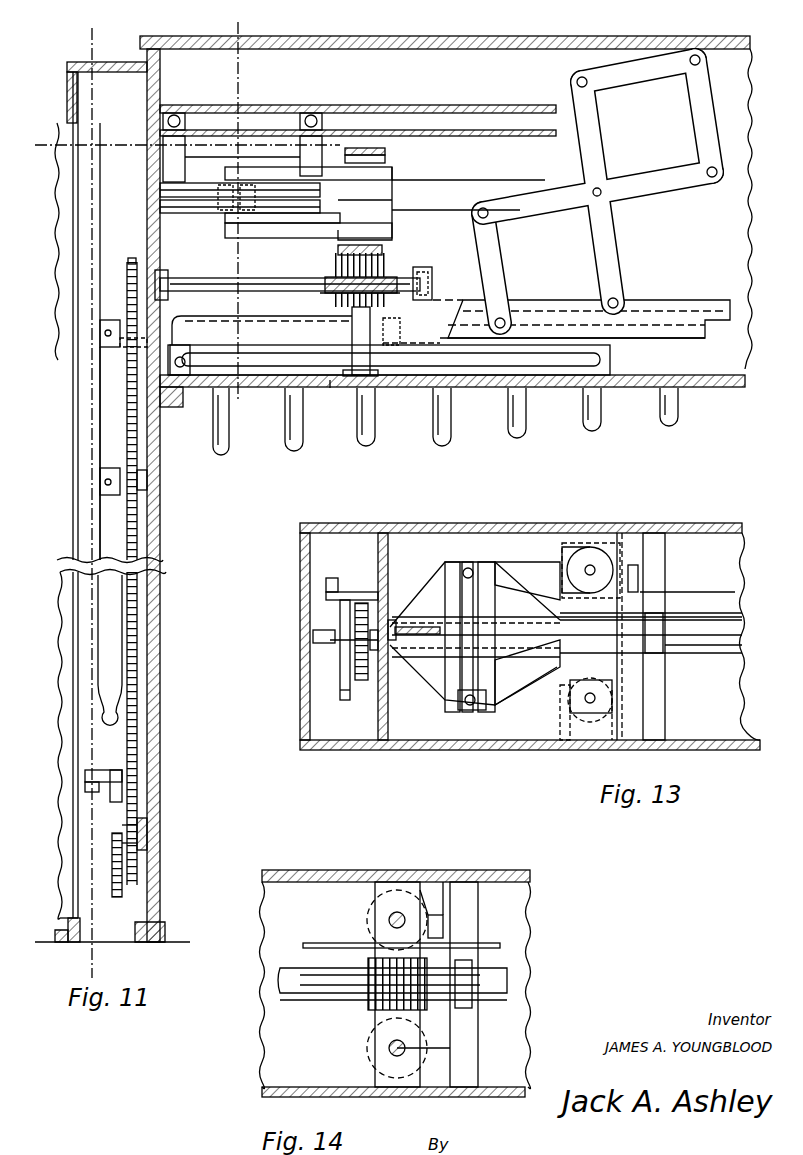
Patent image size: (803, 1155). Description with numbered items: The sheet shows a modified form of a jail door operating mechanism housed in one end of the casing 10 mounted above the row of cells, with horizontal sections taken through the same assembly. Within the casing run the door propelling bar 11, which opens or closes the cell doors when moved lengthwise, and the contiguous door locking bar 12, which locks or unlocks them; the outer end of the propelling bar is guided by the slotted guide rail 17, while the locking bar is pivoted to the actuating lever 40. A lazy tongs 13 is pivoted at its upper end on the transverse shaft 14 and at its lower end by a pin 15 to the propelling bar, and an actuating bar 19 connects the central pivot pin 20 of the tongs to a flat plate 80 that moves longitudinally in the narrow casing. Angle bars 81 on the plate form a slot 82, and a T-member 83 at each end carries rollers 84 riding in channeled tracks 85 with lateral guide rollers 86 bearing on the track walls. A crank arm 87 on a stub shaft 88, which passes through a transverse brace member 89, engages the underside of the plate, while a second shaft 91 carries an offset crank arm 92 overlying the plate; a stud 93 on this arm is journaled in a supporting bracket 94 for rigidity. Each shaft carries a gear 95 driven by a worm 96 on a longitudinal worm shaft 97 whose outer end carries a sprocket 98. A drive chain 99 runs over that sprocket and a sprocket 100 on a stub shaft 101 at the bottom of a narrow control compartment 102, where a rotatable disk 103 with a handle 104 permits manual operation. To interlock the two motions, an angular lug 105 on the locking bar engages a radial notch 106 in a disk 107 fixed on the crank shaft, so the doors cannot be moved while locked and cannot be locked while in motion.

In FIG. 11, the casing 10 is at (385, 48).
In FIG. 14, the casing 10 is at (294, 869).
In FIG. 11, the door propelling bar 11 is at (691, 320).
In FIG. 13, the door propelling bar 11 is at (710, 644).
In FIG. 14, the door propelling bar 11 is at (503, 984).
In FIG. 11, the door locking bar 12 is at (104, 48).
In FIG. 13, the door locking bar 12 is at (704, 594).
In FIG. 14, the door locking bar 12 is at (501, 946).
In FIG. 11, the lazy tongs 13 is at (45, 162).
In FIG. 11, the transverse shaft 14 is at (308, 243).
In FIG. 11, the pin 15 is at (252, 32).
In FIG. 11, the guide rail 17 is at (234, 420).
In FIG. 13, the guide rail 17 is at (720, 623).
In FIG. 14, the guide rail 17 is at (294, 1000).
In FIG. 11, the actuating bar 19 is at (416, 200).
In FIG. 13, the actuating bar 19 is at (692, 653).
In FIG. 11, the central pivot pin 20 is at (605, 198).
In FIG. 11, the actuating lever 40 is at (107, 414).
In FIG. 13, the actuating lever 40 is at (332, 580).
In FIG. 11, the flat plate 80 is at (162, 190).
In FIG. 13, the flat plate 80 is at (422, 704).
In FIG. 13, the angle bars 81 is at (446, 668).
In FIG. 13, the slot 82 is at (456, 608).
In FIG. 11, the T-member 83 is at (172, 158).
In FIG. 13, the T-member 83 is at (542, 643).
In FIG. 11, the rollers 84 is at (178, 112).
In FIG. 11, the channeled tracks 85 is at (453, 105).
In FIG. 11, the guide roller 86 is at (190, 117).
In FIG. 11, the crank arm 87 is at (275, 230).
In FIG. 13, the crank arm 87 is at (515, 557).
In FIG. 13, the stub shaft 88 is at (595, 570).
In FIG. 14, the stub shaft 88 is at (386, 923).
In FIG. 11, the transverse brace member 89 is at (380, 250).
In FIG. 13, the transverse brace member 89 is at (614, 549).
In FIG. 14, the transverse brace member 89 is at (386, 1029).
In FIG. 11, the second shaft 91 is at (352, 328).
In FIG. 14, the second shaft 91 is at (453, 1048).
In FIG. 11, the second crank arm 92 is at (388, 192).
In FIG. 13, the second crank arm 92 is at (555, 718).
In FIG. 11, the stud 93 is at (365, 148).
In FIG. 13, the stud 93 is at (582, 722).
In FIG. 11, the supporting bracket 94 is at (376, 161).
In FIG. 13, the supporting bracket 94 is at (612, 738).
In FIG. 11, the gear 95 is at (332, 292).
In FIG. 13, the gear 95 is at (630, 544).
In FIG. 14, the gear 95 is at (370, 903).
In FIG. 11, the worm 96 is at (332, 265).
In FIG. 13, the worm 96 is at (558, 610).
In FIG. 14, the worm 96 is at (368, 1008).
In FIG. 11, the worm shaft 97 is at (232, 281).
In FIG. 13, the worm shaft 97 is at (362, 680).
In FIG. 14, the worm shaft 97 is at (322, 967).
In FIG. 11, the sprocket 98 is at (125, 259).
In FIG. 11, the drive chain 99 is at (137, 612).
In FIG. 13, the drive chain 99 is at (355, 671).
In FIG. 11, the sprocket 100 is at (155, 865).
In FIG. 11, the stub shaft 101 is at (140, 832).
In FIG. 13, the stub shaft 101 is at (359, 643).
In FIG. 11, the control compartment 102 is at (70, 275).
In FIG. 13, the control compartment 102 is at (302, 545).
In FIG. 11, the rotatable disk 103 is at (116, 868).
In FIG. 13, the rotatable disk 103 is at (342, 698).
In FIG. 11, the handle 104 is at (86, 800).
In FIG. 13, the handle 104 is at (324, 632).
In FIG. 11, the angular lug 105 is at (396, 375).
In FIG. 13, the angular lug 105 is at (638, 575).
In FIG. 14, the angular lug 105 is at (440, 883).
In FIG. 14, the radial notch 106 is at (422, 886).
In FIG. 11, the disk 107 is at (330, 380).
In FIG. 14, the disk 107 is at (443, 919).